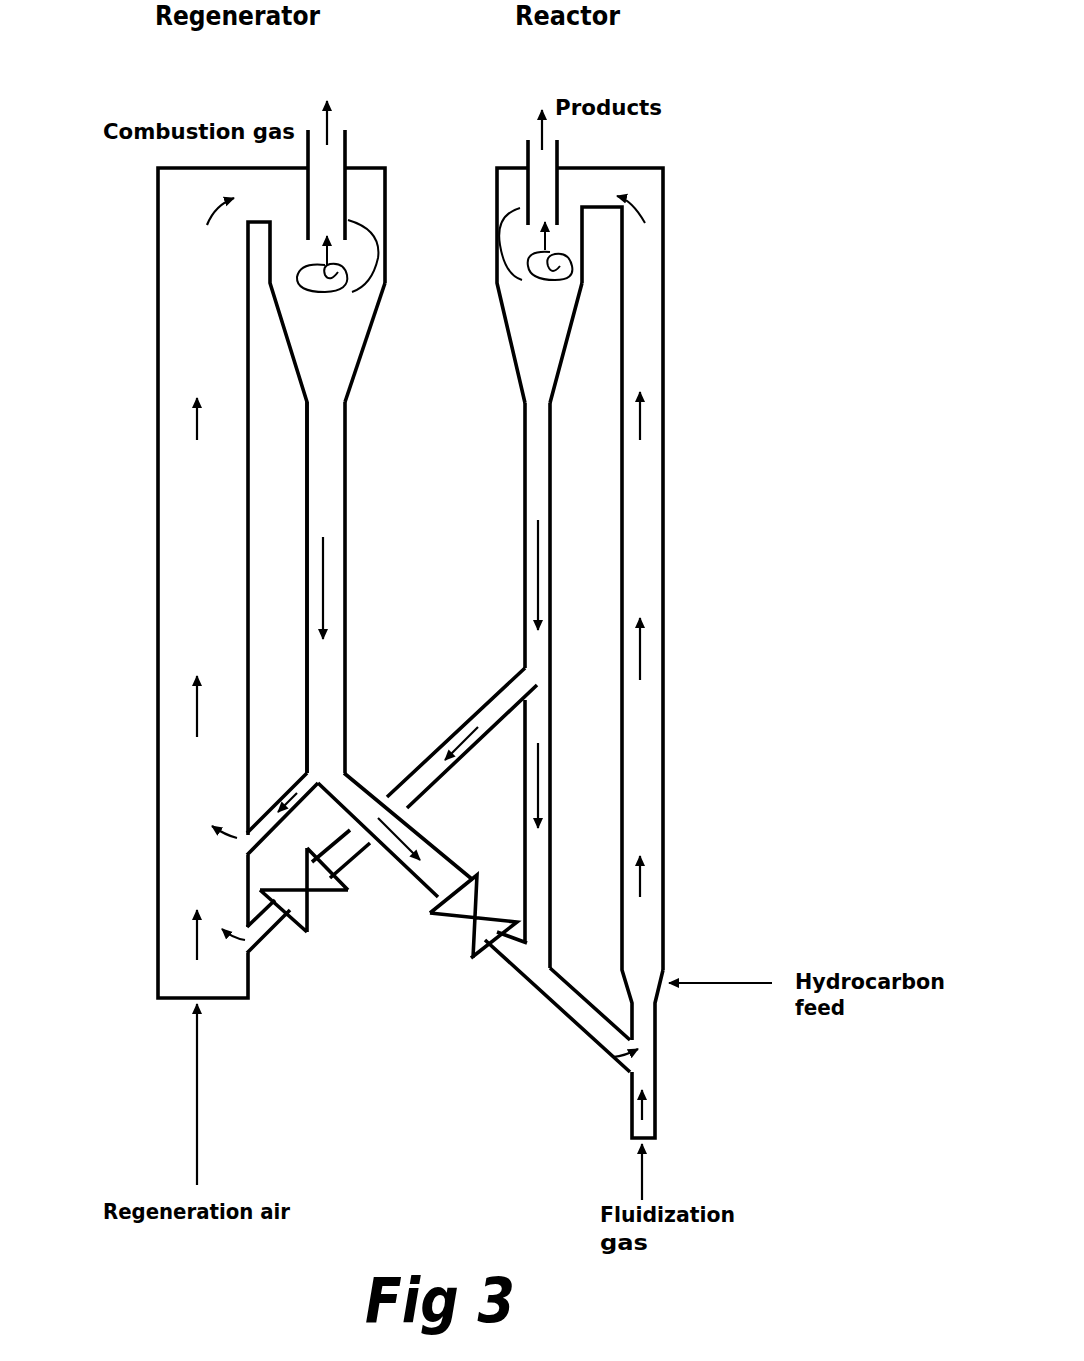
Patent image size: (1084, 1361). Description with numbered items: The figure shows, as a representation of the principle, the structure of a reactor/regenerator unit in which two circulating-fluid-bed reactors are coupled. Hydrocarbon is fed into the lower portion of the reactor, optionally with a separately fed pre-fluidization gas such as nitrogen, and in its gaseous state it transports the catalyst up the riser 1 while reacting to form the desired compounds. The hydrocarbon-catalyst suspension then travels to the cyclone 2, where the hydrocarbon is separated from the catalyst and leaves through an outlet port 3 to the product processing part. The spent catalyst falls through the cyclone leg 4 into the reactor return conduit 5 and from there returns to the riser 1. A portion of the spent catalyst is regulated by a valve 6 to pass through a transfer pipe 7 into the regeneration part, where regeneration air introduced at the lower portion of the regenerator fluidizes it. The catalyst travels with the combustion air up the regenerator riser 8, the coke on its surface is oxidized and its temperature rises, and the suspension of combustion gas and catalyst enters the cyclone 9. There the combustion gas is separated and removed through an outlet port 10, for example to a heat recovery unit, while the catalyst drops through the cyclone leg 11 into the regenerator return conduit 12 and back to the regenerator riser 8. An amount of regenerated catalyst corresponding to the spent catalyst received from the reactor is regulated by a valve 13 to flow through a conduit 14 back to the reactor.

The riser 1 is at (651, 640).
The cyclone 2 is at (520, 330).
The outlet port 3 is at (528, 152).
The cyclone leg 4 is at (524, 460).
The reactor return conduit 5 is at (540, 728).
The valve 6 is at (292, 905).
The transfer pipe 7 is at (497, 686).
The regenerator riser 8 is at (175, 648).
The cyclone 9 is at (357, 328).
The outlet port 10 is at (348, 148).
The cyclone leg 11 is at (333, 497).
The regenerator return conduit 12 is at (300, 778).
The valve 13 is at (475, 938).
The conduit 14 is at (345, 786).